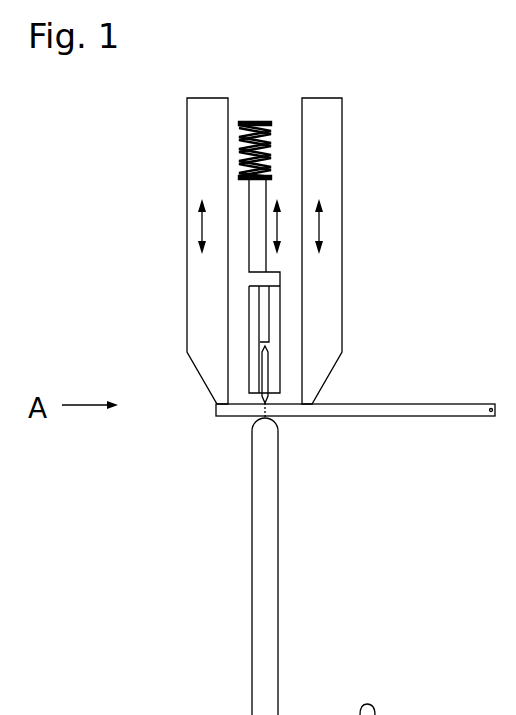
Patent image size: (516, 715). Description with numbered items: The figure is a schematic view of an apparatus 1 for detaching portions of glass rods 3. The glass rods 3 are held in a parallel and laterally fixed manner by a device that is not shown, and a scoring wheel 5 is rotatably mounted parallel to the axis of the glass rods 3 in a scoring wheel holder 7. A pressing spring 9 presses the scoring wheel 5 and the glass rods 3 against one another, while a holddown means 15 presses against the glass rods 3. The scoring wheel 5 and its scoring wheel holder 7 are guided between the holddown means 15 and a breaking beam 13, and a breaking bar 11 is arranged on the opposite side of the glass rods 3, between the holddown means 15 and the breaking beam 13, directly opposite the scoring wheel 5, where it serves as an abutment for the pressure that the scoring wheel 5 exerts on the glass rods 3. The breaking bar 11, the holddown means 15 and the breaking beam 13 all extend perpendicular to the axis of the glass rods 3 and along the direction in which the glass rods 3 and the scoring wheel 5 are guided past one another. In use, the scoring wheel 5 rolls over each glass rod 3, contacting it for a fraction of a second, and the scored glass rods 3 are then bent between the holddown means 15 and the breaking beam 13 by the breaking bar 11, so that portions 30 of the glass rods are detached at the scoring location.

The apparatus 1 is at (433, 143).
The glass rod 3 is at (443, 417).
The scoring wheel 5 is at (270, 401).
The scoring wheel holder 7 is at (283, 330).
The pressing spring 9 is at (273, 148).
The breaking bar 11 is at (253, 605).
The breaking beam 13 is at (342, 210).
The holddown means 15 is at (187, 195).
The portion 30 is at (232, 418).